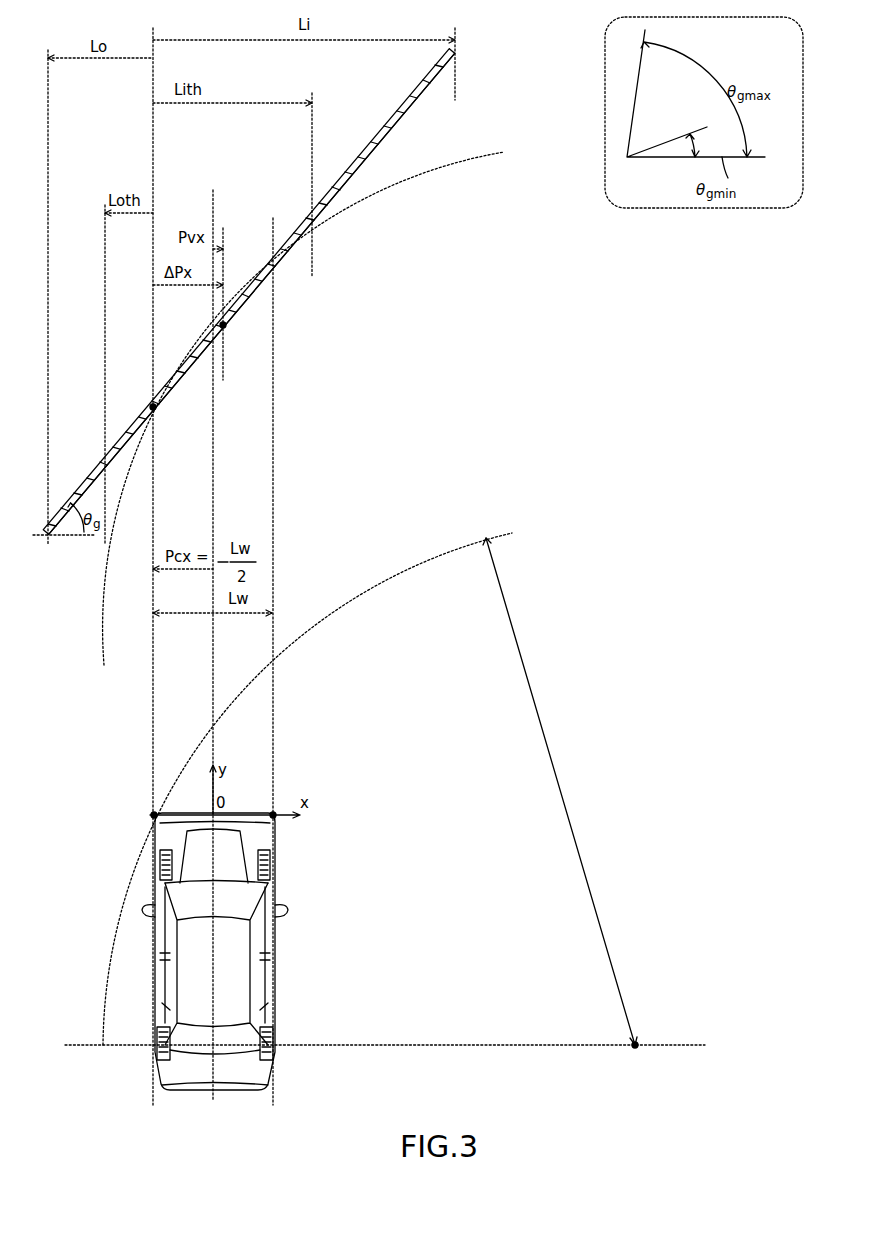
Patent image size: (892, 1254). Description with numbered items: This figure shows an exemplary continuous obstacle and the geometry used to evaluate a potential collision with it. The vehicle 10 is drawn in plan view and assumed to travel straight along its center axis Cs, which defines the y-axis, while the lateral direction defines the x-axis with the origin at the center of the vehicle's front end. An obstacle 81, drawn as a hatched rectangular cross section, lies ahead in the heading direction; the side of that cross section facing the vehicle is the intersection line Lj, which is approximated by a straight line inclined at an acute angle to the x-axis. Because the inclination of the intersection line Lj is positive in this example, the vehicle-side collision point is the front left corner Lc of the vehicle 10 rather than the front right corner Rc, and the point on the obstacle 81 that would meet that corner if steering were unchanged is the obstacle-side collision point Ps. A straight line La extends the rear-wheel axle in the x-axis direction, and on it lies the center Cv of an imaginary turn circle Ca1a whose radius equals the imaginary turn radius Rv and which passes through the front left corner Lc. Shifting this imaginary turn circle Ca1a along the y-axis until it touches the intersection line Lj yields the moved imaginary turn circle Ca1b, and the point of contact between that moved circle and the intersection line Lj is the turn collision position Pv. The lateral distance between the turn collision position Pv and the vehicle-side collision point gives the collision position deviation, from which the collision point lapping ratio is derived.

The obstacle 81 is at (383, 123).
The intersection line Lj is at (420, 98).
The vehicle 10 is at (276, 960).
The obstacle-side collision point Ps is at (156, 410).
The turn collision position Pv is at (226, 328).
The center axis Cs is at (213, 190).
The moved imaginary turn circle Ca1b is at (504, 152).
The imaginary turn circle Ca1a is at (340, 608).
The imaginary turn radius Rv is at (560, 791).
The center of imaginary turn circle Cv is at (637, 1048).
The straight line extending the rear axle La is at (398, 1045).
The front left corner Lc is at (151, 817).
The front right corner Rc is at (276, 818).